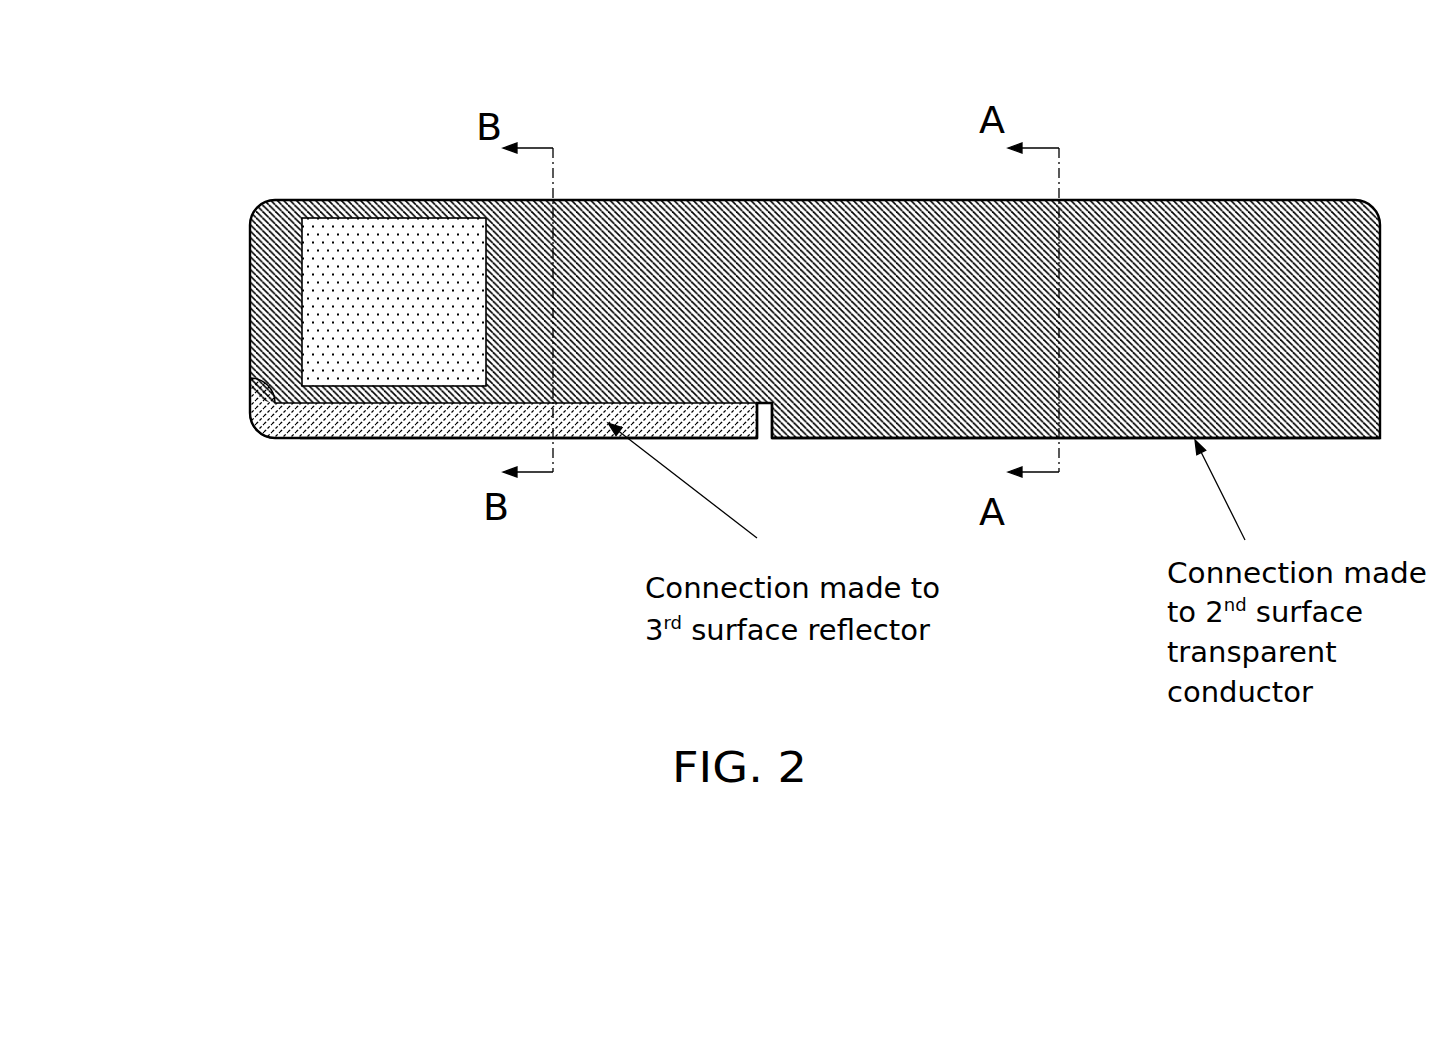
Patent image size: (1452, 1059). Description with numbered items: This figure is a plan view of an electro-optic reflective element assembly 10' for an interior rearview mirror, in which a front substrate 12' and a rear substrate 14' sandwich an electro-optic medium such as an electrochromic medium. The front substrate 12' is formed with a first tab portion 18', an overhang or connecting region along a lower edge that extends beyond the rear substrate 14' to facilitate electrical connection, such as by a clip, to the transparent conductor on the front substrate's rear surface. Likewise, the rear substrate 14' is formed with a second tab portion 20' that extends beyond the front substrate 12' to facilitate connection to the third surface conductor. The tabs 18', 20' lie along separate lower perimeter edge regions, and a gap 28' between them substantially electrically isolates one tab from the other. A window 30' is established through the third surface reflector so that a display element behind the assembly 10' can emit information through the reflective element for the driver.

The electro-optic reflective element assembly 10' is at (736, 314).
The front substrate 12' is at (736, 340).
The rear substrate 14' is at (528, 525).
The first tab portion 18' is at (1076, 484).
The second tab portion 20' is at (503, 457).
The gap 28' is at (804, 455).
The window 30' is at (394, 238).